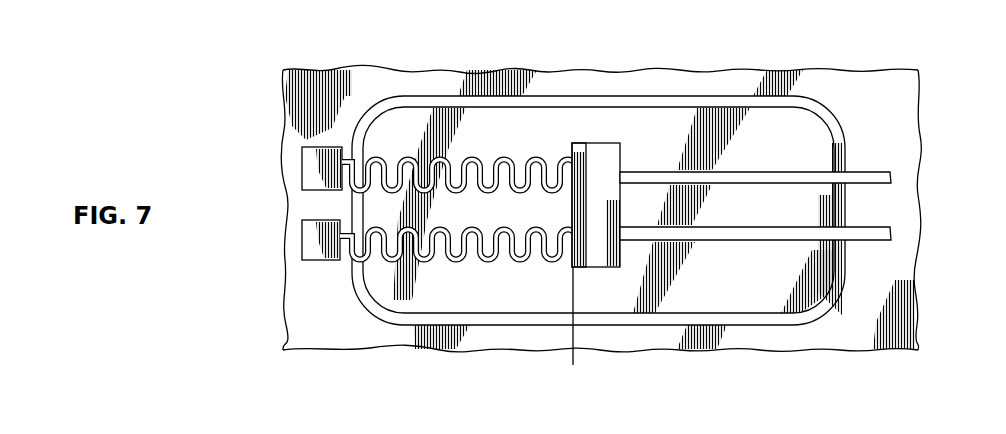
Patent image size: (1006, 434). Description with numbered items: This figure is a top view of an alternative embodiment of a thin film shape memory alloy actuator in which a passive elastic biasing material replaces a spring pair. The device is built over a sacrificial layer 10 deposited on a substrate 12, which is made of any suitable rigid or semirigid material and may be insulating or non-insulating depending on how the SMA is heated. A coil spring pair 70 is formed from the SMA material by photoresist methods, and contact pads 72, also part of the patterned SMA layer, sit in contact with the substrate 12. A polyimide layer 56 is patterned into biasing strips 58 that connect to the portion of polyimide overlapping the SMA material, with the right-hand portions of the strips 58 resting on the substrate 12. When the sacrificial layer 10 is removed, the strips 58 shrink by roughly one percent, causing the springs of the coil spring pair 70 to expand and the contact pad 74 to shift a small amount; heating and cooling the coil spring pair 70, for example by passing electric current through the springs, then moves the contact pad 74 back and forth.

The sacrificial layer 10 is at (357, 281).
The substrate 12 is at (287, 123).
The polyimide layer 56 is at (890, 233).
The biasing strips 58 is at (572, 143).
The coil spring pair 70 is at (477, 230).
The contact pads 72 is at (303, 172).
The contact pad 74 is at (611, 158).